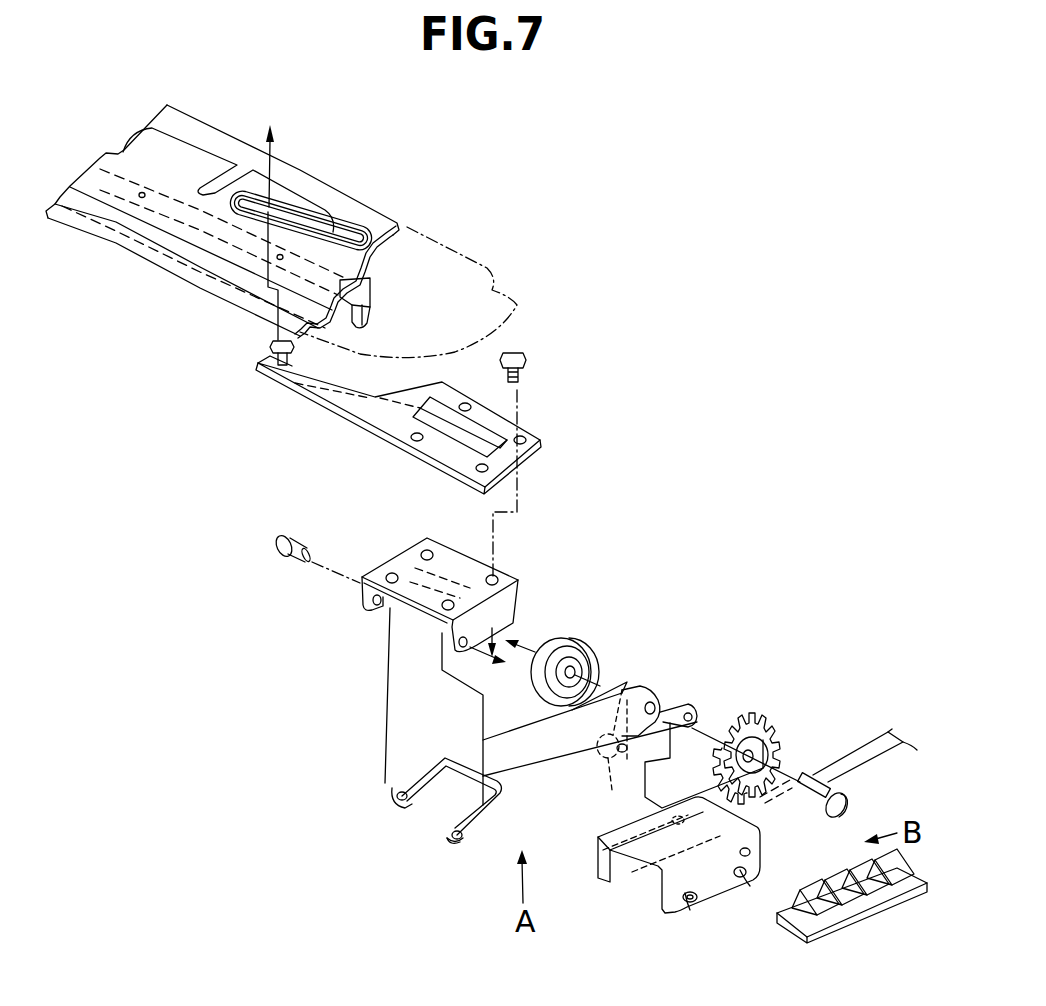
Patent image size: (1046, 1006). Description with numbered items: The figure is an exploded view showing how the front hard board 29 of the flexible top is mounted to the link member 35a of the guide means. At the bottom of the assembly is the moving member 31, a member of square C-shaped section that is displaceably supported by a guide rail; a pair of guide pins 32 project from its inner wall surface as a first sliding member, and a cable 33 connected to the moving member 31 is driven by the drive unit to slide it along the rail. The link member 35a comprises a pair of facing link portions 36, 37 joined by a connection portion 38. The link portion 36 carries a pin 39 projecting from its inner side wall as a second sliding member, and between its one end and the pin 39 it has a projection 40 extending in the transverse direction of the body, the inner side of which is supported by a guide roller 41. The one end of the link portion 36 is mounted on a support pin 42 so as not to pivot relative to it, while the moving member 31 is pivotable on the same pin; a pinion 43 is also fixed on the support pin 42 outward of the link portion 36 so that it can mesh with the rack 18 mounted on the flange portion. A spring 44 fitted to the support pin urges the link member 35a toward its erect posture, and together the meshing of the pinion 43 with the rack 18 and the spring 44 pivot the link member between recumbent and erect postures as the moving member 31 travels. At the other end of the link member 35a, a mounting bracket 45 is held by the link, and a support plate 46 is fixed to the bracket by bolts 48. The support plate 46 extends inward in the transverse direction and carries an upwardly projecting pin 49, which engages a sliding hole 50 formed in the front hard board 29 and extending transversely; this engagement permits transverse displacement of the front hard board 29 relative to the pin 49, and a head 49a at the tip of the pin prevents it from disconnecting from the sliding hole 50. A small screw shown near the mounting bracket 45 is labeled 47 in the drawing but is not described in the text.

The rack 18 is at (876, 900).
The front hard board 29 is at (203, 160).
The moving member 31 is at (632, 886).
The guide pins 32 is at (718, 870).
The cable 33 is at (828, 760).
The link member 35a is at (637, 632).
The link portion 36 is at (493, 815).
The link portion 37 is at (415, 800).
The connection portion 38 is at (542, 748).
The pin 39 is at (609, 758).
The projection 40 is at (668, 708).
The guide roller 41 is at (637, 692).
The support pin 42 is at (845, 808).
The pinion 43 is at (770, 732).
The spring 44 is at (562, 635).
The mounting bracket 45 is at (522, 530).
The support plate 46 is at (543, 441).
The screw 47 is at (280, 558).
The bolts 48 is at (527, 357).
The pin 49 is at (275, 372).
The head 49a is at (272, 345).
The sliding hole 50 is at (335, 227).